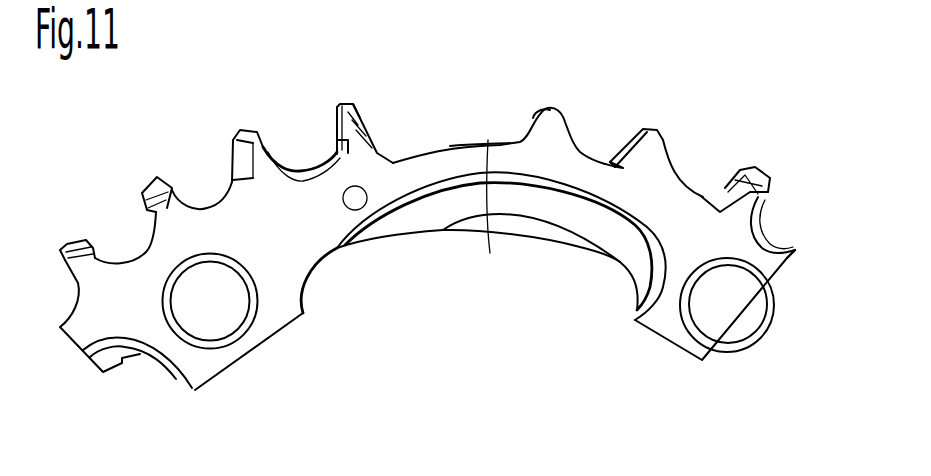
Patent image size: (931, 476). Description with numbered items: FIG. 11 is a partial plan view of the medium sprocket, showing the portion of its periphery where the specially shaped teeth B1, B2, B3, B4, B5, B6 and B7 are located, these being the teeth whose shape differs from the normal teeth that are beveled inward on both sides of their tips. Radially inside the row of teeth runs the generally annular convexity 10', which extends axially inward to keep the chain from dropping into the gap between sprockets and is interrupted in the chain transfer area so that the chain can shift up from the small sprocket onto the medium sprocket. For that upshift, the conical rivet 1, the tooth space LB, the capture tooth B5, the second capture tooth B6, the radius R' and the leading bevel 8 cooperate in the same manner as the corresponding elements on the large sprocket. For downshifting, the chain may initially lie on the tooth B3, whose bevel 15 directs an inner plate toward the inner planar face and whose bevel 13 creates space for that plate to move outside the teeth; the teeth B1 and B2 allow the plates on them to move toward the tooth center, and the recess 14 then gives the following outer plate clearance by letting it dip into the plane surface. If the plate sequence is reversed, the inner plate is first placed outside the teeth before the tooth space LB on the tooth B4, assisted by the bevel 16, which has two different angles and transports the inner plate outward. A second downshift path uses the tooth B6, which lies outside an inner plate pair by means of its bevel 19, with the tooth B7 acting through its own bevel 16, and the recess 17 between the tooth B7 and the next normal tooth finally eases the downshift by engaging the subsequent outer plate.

The conical rivet 1 is at (343, 213).
The leading bevel 8 is at (378, 155).
The convexity 10' is at (501, 262).
The bevel 13 is at (240, 178).
The recess 14 is at (330, 156).
The bevel 15 is at (245, 140).
The bevel 16 is at (340, 103).
The recess 17 is at (773, 248).
The bevel 19 is at (628, 155).
The tooth B1 is at (93, 247).
The tooth B2 is at (165, 182).
The tooth B3 is at (268, 147).
The tooth B4 is at (358, 163).
The capture tooth B5 is at (550, 122).
The second capture tooth B6 is at (655, 145).
The tooth B7 is at (753, 197).
The tooth space LB is at (462, 145).
The radius R' is at (491, 212).